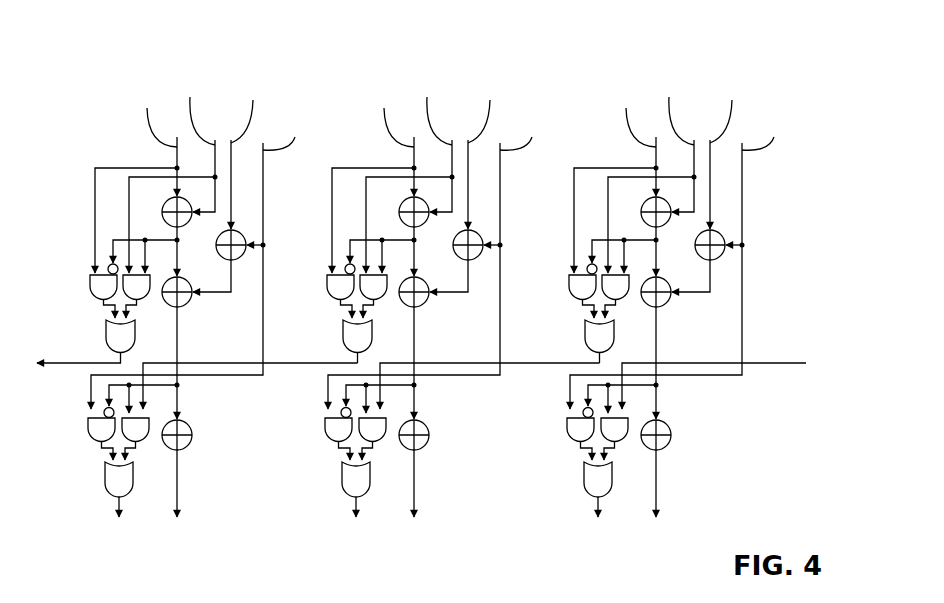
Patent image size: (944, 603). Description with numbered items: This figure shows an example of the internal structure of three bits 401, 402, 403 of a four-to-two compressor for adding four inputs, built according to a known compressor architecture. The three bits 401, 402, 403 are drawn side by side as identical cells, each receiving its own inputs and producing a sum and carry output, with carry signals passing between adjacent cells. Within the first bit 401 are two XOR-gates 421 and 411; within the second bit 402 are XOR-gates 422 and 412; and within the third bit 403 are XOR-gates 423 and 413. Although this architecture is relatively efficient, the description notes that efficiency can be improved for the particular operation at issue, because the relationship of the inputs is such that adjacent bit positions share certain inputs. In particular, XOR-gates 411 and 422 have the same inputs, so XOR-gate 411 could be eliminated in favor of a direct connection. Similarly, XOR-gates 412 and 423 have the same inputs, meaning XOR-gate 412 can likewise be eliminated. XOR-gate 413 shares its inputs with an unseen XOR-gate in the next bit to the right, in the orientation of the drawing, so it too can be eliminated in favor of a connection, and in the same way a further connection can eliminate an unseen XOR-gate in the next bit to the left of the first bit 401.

The bit 401 is at (260, 60).
The bit 402 is at (462, 283).
The bit 403 is at (686, 283).
The XOR-gate 411 is at (240, 232).
The XOR-gate 412 is at (504, 232).
The XOR-gate 413 is at (746, 232).
The XOR-gate 421 is at (188, 202).
The XOR-gate 422 is at (477, 194).
The XOR-gate 423 is at (719, 194).